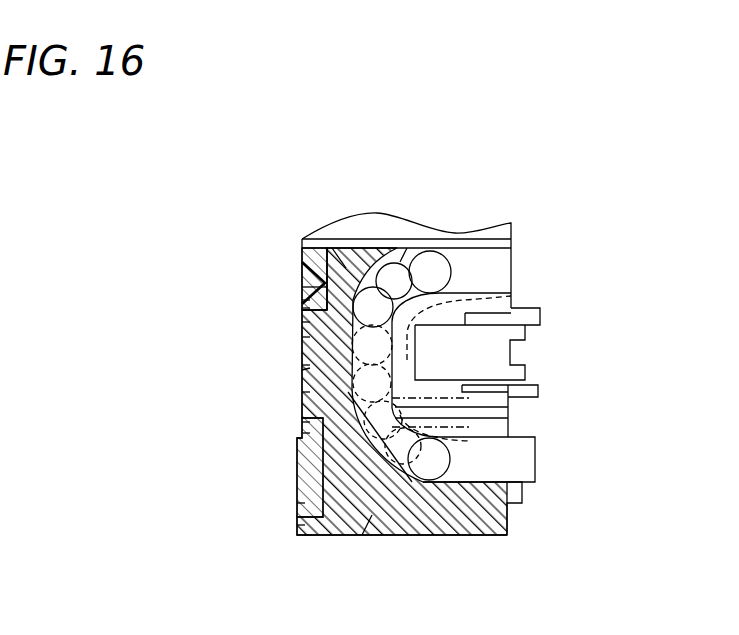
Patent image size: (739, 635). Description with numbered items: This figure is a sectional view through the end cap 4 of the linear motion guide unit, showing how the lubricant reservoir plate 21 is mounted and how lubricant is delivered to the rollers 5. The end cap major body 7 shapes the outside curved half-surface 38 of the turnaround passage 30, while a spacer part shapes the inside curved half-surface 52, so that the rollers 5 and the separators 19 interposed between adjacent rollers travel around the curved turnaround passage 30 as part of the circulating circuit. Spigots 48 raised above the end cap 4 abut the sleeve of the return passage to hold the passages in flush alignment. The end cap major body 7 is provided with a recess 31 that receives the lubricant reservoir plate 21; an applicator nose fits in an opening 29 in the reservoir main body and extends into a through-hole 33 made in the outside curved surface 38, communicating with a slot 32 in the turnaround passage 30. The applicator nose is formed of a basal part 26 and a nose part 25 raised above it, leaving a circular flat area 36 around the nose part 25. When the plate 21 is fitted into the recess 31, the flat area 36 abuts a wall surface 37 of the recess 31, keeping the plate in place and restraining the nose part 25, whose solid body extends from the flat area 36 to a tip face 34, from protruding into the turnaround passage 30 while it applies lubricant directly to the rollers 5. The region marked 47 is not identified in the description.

The end cap 4 is at (437, 222).
The roller 5 is at (458, 297).
The end cap major body 7 is at (351, 248).
The separator 19 is at (470, 427).
The lubricant reservoir plate 21 is at (300, 266).
The nose part 25 is at (302, 365).
The basal part 26 is at (302, 422).
The opening 29 is at (302, 300).
The turnaround passage 30 is at (385, 248).
The recess 31 is at (298, 503).
The slot 32 is at (302, 370).
The through-hole 33 is at (302, 322).
The tip face 34 is at (302, 337).
The circular flat area 36 is at (332, 248).
The wall surface 37 is at (302, 308).
The outside curved half-surface 38 is at (407, 248).
The bottom edge 47 is at (298, 525).
The spigot 48 is at (534, 318).
The inside curved half-surface 52 is at (308, 535).